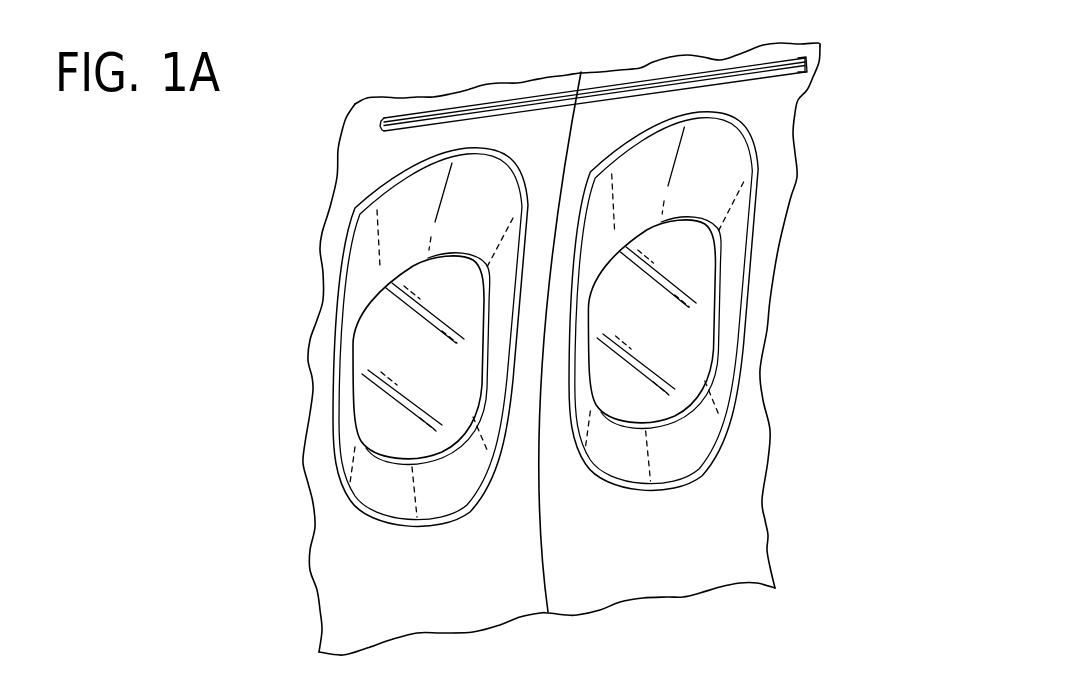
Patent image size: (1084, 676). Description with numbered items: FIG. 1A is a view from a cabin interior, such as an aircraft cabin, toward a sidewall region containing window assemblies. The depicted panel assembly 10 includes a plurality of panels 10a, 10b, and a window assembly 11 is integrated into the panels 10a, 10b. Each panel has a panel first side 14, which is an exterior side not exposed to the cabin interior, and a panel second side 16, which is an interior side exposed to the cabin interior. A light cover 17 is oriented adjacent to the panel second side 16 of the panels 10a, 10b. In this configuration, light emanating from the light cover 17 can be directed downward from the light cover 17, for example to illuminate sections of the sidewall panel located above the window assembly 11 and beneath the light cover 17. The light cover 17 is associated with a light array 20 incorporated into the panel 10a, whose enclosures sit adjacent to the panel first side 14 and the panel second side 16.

The panel assembly 10 is at (814, 266).
The panel 10a is at (534, 137).
The panel 10b is at (738, 100).
The window assembly 11 is at (347, 437).
The panel first side 14 is at (328, 175).
The panel second side 16 is at (354, 145).
The light cover 17 is at (475, 106).
The light array 20 is at (809, 64).